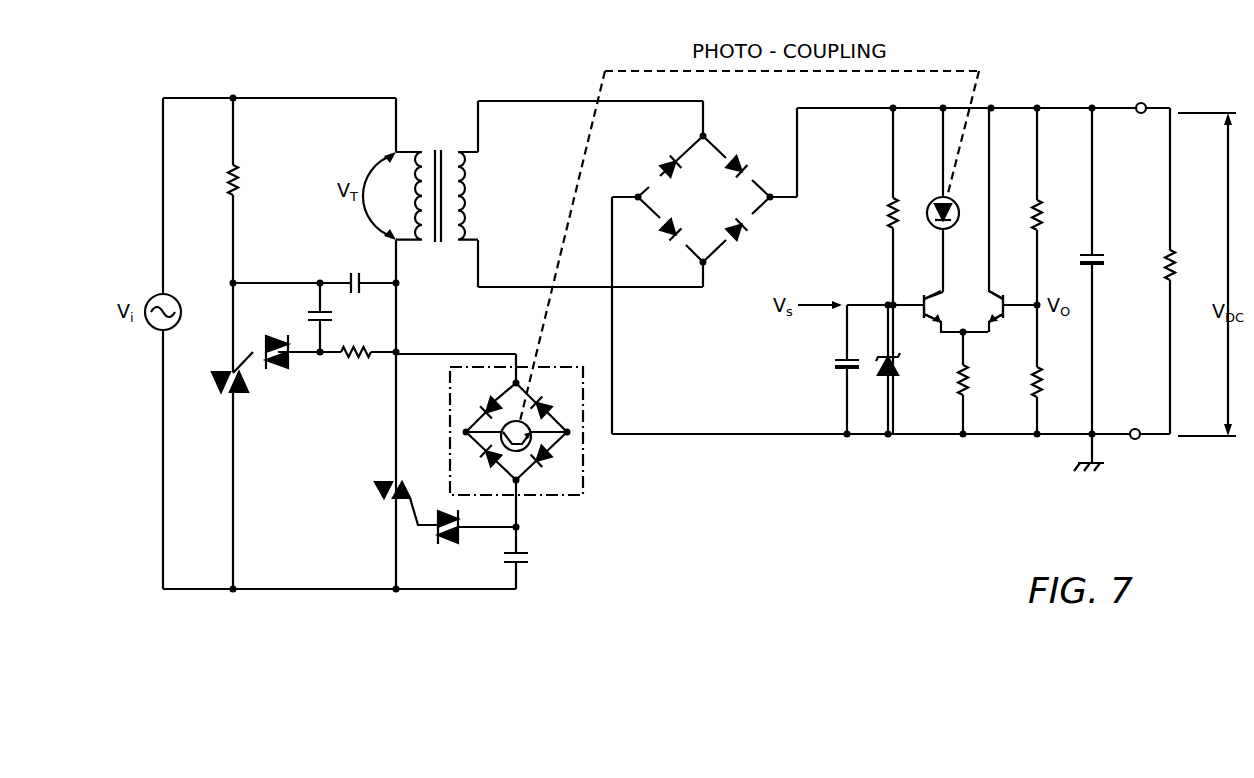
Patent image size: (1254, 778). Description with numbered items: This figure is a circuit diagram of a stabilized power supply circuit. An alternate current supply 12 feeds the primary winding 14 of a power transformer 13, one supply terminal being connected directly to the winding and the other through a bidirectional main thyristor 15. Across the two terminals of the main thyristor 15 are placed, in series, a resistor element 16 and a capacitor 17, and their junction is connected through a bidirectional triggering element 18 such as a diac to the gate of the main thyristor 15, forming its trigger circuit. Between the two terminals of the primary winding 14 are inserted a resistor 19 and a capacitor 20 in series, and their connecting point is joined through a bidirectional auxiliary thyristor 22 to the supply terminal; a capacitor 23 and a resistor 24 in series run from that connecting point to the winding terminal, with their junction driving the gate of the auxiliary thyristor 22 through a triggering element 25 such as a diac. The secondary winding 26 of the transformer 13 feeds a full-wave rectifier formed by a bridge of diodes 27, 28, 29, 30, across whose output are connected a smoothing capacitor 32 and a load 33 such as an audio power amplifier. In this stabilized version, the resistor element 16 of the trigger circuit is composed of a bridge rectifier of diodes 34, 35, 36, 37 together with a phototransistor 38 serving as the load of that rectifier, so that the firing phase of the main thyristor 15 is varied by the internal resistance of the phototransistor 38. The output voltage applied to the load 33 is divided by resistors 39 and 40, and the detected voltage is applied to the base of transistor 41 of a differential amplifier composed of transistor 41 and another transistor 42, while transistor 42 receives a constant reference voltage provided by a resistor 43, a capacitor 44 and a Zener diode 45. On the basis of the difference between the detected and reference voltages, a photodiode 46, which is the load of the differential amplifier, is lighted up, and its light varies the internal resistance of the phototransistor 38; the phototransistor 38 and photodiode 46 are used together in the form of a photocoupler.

The alternate current supply 12 is at (182, 312).
The power transformer 13 is at (439, 142).
The primary winding 14 is at (412, 192).
The bidirectional main thyristor 15 is at (370, 490).
The resistor of the trigger circuit 16 is at (584, 486).
The capacitor 17 is at (530, 562).
The bidirectional triggering element 18 is at (448, 546).
The resistor 19 is at (238, 180).
The capacitor 20 is at (355, 272).
The bidirectional auxiliary thyristor 22 is at (210, 381).
The capacitor 23 is at (334, 316).
The resistor 24 is at (354, 366).
The triggering element 25 is at (278, 334).
The secondary winding 26 is at (466, 190).
The diode 27 is at (742, 168).
The diode 28 is at (742, 228).
The diode 29 is at (664, 228).
The diode 30 is at (664, 168).
The smoothing capacitor 32 is at (1105, 260).
The load 33 is at (1175, 263).
The diode 34 is at (494, 404).
The diode 35 is at (538, 404).
The diode 36 is at (494, 462).
The diode 37 is at (538, 462).
The phototransistor 38 is at (545, 438).
The resistor 39 is at (1042, 213).
The resistor 40 is at (1042, 380).
The transistor 41 is at (1001, 296).
The transistor 42 is at (942, 301).
The resistor 43 is at (886, 213).
The capacitor 44 is at (834, 360).
The Zener diode 45 is at (900, 368).
The photodiode 46 is at (928, 207).